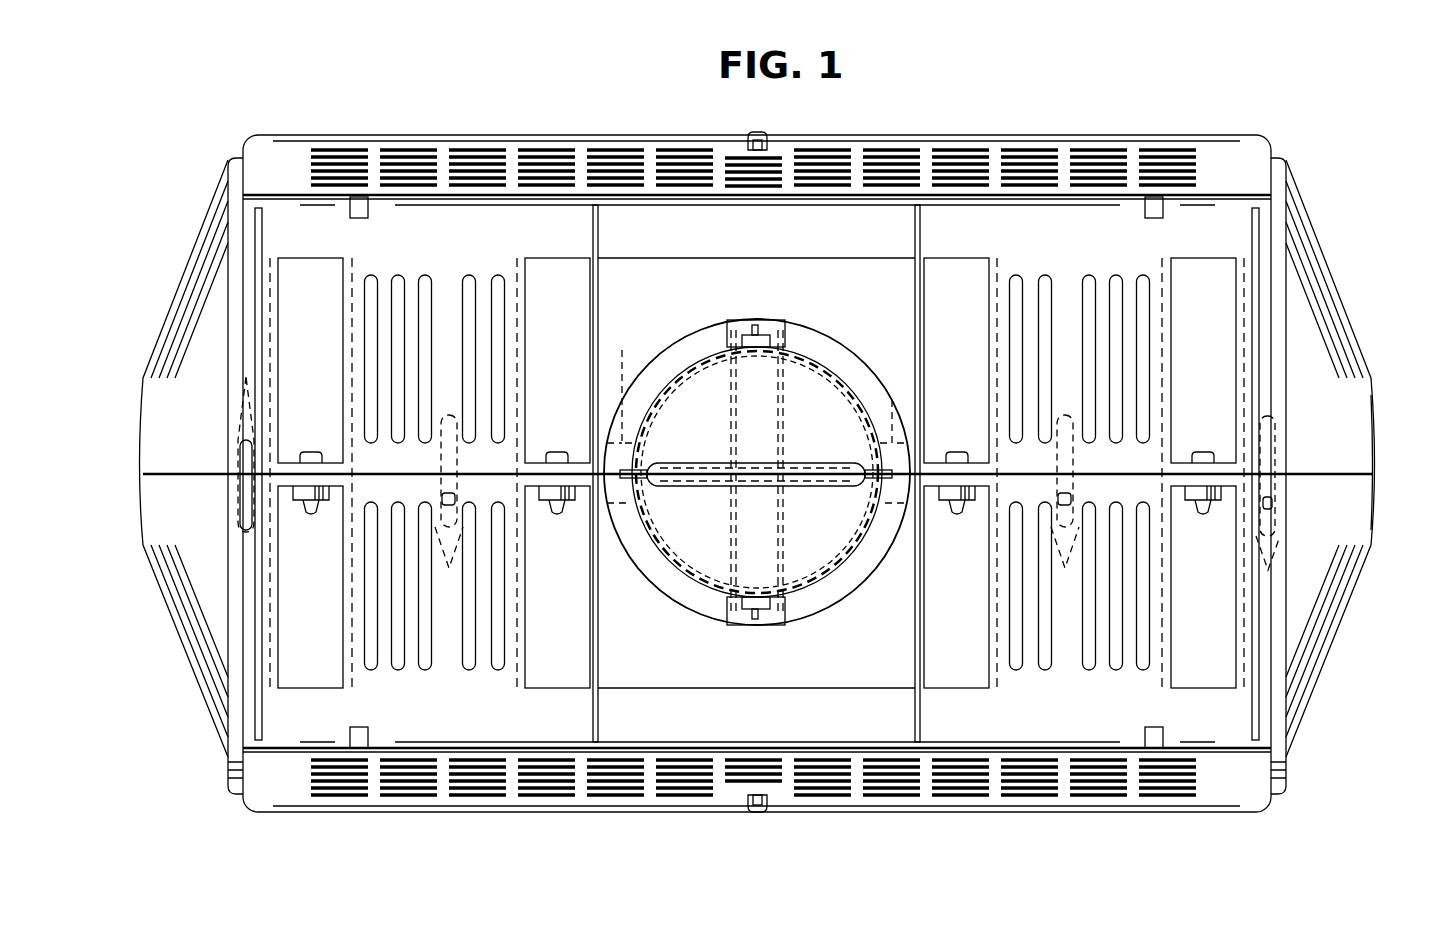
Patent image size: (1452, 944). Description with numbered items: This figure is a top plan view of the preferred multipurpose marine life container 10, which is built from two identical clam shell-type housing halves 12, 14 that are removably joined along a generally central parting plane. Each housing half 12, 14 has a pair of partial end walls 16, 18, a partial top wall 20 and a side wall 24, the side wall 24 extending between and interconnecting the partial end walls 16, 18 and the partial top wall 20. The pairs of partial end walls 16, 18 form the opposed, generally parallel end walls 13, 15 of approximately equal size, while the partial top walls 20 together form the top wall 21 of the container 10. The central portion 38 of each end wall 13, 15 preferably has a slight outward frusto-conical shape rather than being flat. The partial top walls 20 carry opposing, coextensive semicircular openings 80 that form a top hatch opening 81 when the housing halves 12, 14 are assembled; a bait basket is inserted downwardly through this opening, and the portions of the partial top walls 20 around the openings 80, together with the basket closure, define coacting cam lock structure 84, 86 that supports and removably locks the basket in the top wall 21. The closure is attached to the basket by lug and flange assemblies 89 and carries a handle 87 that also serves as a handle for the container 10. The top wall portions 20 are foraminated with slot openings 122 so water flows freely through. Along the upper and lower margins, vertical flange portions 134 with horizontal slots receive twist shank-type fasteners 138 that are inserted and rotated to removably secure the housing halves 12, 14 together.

The multipurpose marine life container 10 is at (1145, 122).
The housing half 12 is at (1300, 290).
The end wall 13 is at (192, 722).
The housing half 14 is at (1305, 640).
The end wall 15 is at (1393, 405).
The partial end wall 16 is at (200, 300).
The partial end wall 18 is at (195, 600).
The partial top wall 20 is at (1010, 242).
The top wall 21 is at (735, 222).
The side wall 24 is at (931, 152).
The central portion of end wall 38 is at (1348, 512).
The semicircular opening 80 is at (840, 372).
The top hatch opening 81 is at (833, 568).
The cam lock structure 84 is at (728, 612).
The cam lock structure 86 is at (757, 411).
The handle 87 is at (690, 478).
The lug and flange assembly 89 is at (750, 336).
The slot opening 122 is at (477, 292).
The vertical flange portion 134 is at (546, 452).
The twist shank-type fastener 138 is at (552, 510).